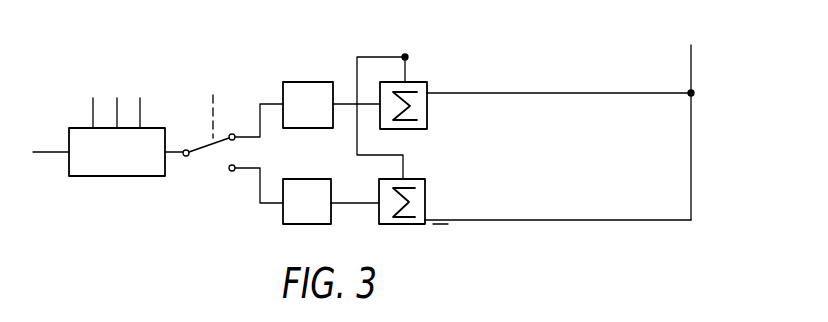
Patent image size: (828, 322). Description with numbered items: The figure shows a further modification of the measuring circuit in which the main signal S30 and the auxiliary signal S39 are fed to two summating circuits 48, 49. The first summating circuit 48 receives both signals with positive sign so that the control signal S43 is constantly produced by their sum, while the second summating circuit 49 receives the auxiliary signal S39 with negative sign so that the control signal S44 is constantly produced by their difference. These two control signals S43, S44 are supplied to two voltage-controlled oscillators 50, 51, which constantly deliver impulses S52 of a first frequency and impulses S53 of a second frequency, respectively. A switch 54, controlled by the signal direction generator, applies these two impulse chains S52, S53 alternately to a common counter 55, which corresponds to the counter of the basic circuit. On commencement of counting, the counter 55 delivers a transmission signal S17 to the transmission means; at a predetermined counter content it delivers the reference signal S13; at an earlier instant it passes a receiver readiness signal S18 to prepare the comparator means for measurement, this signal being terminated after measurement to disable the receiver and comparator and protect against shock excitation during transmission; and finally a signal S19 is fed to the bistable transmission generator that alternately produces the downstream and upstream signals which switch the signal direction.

The signal S19 is at (93, 110).
The receiver readiness signal S18 is at (117, 108).
The reference signal S13 is at (140, 108).
The transmission signal S17 is at (48, 152).
The common counter 55 is at (130, 160).
The switch 54 is at (206, 144).
The impulses S52 is at (268, 88).
The impulses S53 is at (256, 195).
The voltage-controlled oscillator 50 is at (320, 116).
The voltage-controlled oscillator 51 is at (317, 212).
The control signal S43 is at (345, 92).
The control signal S44 is at (359, 207).
The main signal S30 is at (405, 57).
The summating circuit 48 is at (427, 118).
The summating circuit 49 is at (427, 190).
The auxiliary signal S39 is at (691, 55).